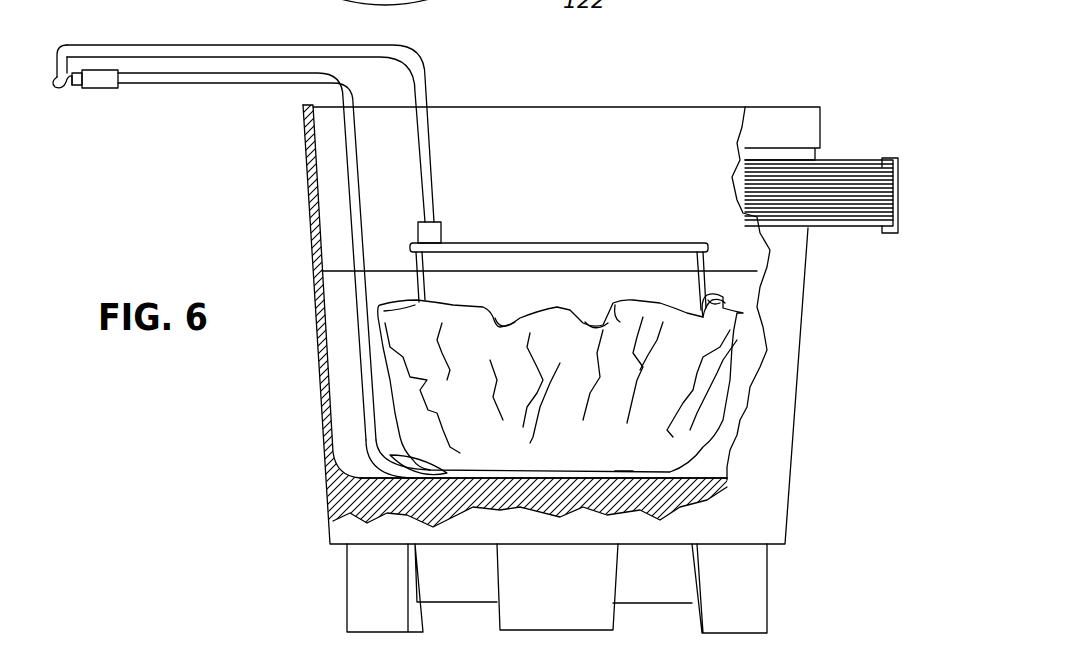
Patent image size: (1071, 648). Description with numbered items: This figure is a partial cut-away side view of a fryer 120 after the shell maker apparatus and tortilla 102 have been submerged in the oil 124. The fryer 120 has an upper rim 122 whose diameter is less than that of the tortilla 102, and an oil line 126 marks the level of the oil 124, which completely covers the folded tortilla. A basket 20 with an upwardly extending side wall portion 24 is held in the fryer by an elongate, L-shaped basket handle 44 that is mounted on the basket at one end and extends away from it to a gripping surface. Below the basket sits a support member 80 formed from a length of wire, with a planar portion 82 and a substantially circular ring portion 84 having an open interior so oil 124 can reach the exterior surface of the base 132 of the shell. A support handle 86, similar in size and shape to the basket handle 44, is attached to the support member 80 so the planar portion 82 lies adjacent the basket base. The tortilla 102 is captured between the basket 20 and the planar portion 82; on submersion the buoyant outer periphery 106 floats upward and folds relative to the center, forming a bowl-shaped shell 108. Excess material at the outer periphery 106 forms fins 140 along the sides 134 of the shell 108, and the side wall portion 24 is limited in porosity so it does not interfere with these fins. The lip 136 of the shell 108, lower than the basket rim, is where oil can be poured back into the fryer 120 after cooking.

The basket 20 is at (539, 244).
The side wall portion 24 is at (712, 250).
The basket handle 44 is at (146, 46).
The support member 80 is at (645, 477).
The planar portion 82 is at (387, 457).
The ring portion 84 is at (400, 495).
The support handle 86 is at (208, 86).
The tortilla 102 is at (393, 385).
The outer periphery 106 is at (420, 332).
The bowl-shaped shell 108 is at (712, 428).
The fryer 120 is at (823, 129).
The upper rim 122 is at (813, 107).
The oil 124 is at (337, 305).
The oil line 126 is at (343, 268).
The base 132 is at (625, 473).
The sides 134 is at (728, 366).
The lip 136 is at (628, 318).
The fins 140 is at (728, 306).